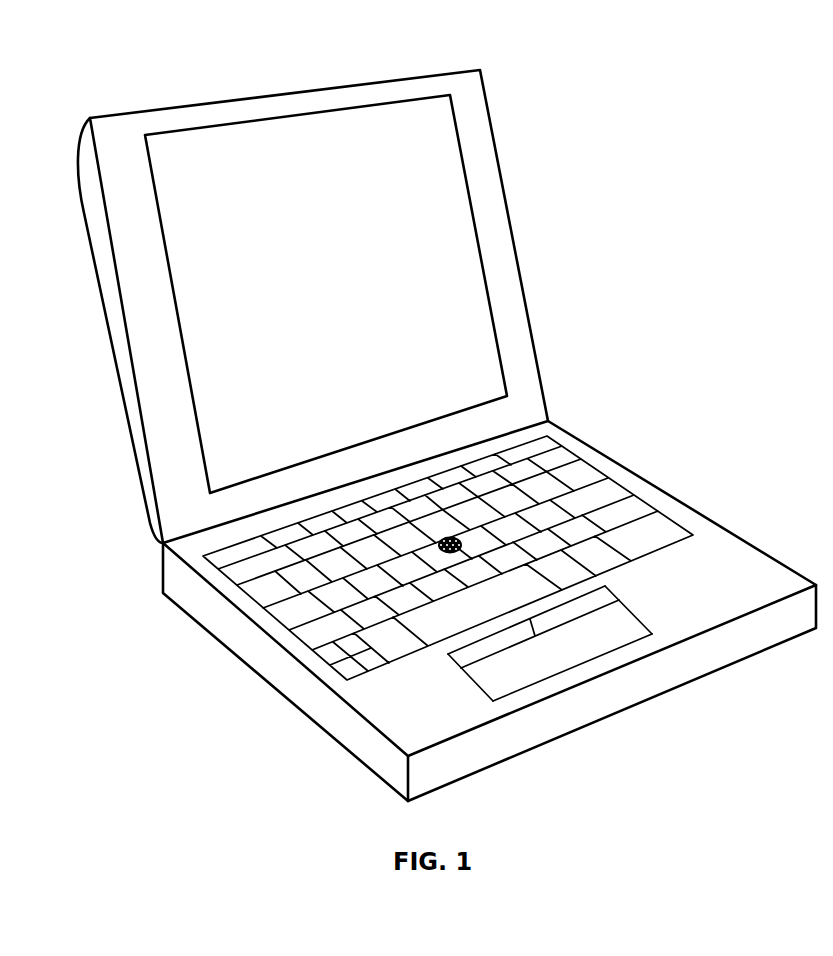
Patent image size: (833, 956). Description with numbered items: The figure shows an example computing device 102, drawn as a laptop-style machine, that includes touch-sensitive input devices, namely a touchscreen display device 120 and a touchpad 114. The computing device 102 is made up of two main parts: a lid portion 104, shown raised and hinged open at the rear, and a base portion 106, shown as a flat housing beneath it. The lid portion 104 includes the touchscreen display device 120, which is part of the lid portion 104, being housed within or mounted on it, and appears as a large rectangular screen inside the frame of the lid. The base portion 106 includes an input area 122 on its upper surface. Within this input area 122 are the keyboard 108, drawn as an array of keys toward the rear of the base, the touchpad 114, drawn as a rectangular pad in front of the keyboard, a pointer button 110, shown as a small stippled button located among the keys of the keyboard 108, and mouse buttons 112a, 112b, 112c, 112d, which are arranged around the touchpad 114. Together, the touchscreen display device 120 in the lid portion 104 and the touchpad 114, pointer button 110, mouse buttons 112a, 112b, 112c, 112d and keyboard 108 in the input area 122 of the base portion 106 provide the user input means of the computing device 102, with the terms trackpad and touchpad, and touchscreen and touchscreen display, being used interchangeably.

The computing device 102 is at (261, 58).
The lid portion 104 is at (488, 102).
The base portion 106 is at (325, 722).
The keyboard 108 is at (607, 478).
The pointer button 110 is at (460, 537).
The mouse button 112a is at (490, 702).
The mouse button 112b is at (455, 660).
The mouse button 112c is at (605, 588).
The mouse button 112d is at (652, 636).
The touchpad 114 is at (552, 648).
The touchscreen display device 120 is at (343, 249).
The input area 122 is at (743, 555).